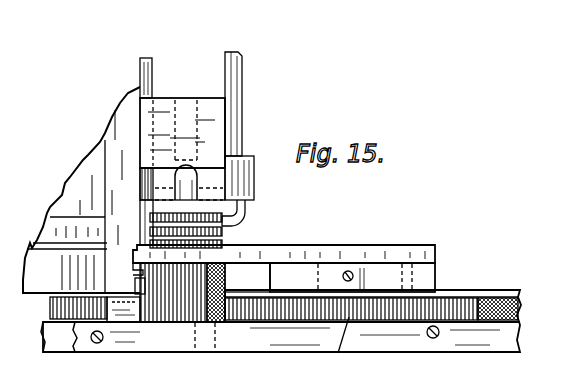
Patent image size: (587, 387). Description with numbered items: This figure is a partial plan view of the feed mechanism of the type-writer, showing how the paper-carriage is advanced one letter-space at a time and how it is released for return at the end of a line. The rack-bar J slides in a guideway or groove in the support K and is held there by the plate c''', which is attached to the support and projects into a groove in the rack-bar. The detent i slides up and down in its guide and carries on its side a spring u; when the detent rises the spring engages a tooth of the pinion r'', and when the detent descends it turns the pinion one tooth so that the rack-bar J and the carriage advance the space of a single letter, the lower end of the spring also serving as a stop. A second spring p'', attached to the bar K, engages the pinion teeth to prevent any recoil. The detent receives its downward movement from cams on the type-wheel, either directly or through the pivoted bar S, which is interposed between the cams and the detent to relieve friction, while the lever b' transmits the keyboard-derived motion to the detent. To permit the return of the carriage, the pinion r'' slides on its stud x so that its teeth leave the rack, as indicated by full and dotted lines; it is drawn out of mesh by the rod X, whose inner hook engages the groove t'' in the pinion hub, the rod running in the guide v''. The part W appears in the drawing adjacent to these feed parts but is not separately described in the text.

The lever b' is at (148, 65).
The rod X is at (243, 104).
The stud x is at (186, 182).
The guide v'' is at (254, 178).
The groove t'' is at (247, 219).
The pivoted bar S is at (284, 243).
The block W is at (368, 275).
The spring p'' is at (250, 277).
The pinion r'' is at (173, 292).
The spring u is at (140, 272).
The detent i is at (143, 287).
The support K is at (290, 321).
The plate c''' is at (280, 337).
The rack-bar J is at (338, 346).